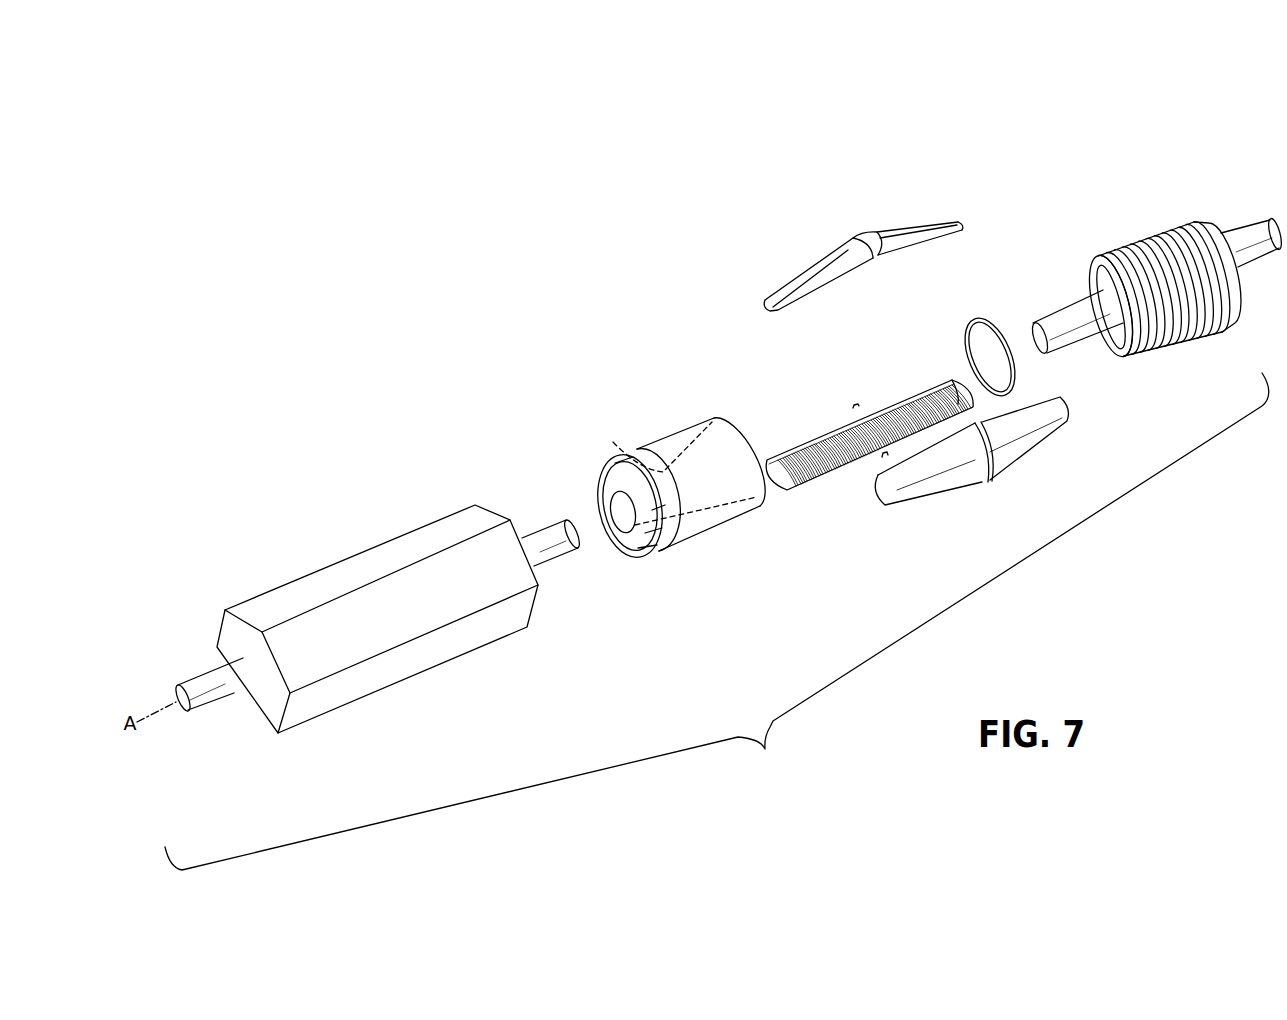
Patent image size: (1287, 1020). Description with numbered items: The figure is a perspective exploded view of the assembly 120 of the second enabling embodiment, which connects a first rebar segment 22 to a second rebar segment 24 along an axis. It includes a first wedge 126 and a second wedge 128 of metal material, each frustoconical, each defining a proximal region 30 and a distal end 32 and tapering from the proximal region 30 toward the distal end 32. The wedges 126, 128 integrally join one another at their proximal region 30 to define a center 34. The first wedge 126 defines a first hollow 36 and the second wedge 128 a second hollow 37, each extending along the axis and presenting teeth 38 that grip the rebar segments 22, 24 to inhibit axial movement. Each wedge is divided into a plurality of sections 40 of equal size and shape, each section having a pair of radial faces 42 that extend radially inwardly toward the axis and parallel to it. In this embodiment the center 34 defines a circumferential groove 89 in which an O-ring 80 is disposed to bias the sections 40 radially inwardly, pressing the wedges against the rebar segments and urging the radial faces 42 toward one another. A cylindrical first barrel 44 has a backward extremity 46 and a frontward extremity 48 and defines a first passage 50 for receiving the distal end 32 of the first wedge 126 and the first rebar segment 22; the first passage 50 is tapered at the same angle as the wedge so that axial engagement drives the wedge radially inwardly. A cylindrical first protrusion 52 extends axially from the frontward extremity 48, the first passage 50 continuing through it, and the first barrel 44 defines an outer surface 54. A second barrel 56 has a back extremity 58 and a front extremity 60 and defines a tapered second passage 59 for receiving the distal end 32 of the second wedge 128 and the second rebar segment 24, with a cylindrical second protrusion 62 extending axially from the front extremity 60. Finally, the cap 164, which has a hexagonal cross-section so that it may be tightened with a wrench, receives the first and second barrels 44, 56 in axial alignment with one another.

The assembly 120 is at (1155, 241).
The first rebar segment 22 is at (198, 683).
The second rebar segment 24 is at (1257, 230).
The cap 164 is at (305, 570).
The second barrel 56 is at (837, 406).
The outer surface 54 is at (703, 528).
The back extremity 58 is at (758, 508).
The front extremity 60 is at (653, 555).
The second protrusion 62 is at (600, 487).
The second passage 59 is at (668, 473).
The first hollow 36 is at (853, 392).
The teeth 38 is at (827, 455).
The radial faces 42 is at (843, 423).
The second hollow 37 is at (933, 390).
The center 34 is at (958, 422).
The sections 40 is at (1028, 447).
The groove 89 is at (987, 488).
The O-ring 80 is at (977, 313).
The first barrel 44 is at (1178, 292).
The backward extremity 46 is at (1183, 222).
The frontward extremity 48 is at (1120, 353).
The first passage 50 is at (1090, 287).
The first protrusion 52 is at (1234, 303).
The first wedge 126 is at (848, 236).
The second wedge 128 is at (912, 222).
The proximal region 30 is at (845, 250).
The distal end 32 is at (761, 306).